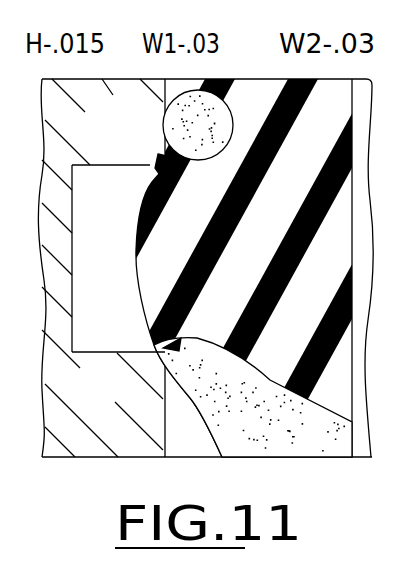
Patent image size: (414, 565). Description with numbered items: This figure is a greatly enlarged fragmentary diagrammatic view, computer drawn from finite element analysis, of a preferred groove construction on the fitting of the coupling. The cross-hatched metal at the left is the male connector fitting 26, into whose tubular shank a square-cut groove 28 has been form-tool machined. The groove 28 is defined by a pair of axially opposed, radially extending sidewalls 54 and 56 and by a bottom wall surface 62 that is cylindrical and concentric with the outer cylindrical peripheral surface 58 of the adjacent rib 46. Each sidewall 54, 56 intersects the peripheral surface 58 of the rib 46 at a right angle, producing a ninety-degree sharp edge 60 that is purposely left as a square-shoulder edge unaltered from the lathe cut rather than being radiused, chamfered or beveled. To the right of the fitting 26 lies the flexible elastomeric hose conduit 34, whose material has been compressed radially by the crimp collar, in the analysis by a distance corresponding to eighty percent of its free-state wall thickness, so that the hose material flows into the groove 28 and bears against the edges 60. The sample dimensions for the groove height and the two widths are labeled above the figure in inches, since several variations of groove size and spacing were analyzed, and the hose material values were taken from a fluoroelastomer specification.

The male connector fitting 26 is at (72, 463).
The groove 28 is at (114, 192).
The flexible elastomeric hose conduit 34 is at (306, 466).
The rib 46 is at (102, 79).
The sidewall 54 is at (95, 166).
The sidewall 56 is at (120, 353).
The outer cylindrical peripheral surface 58 is at (166, 128).
The sharp edge 60 is at (176, 167).
The bottom wall surface 62 is at (77, 260).